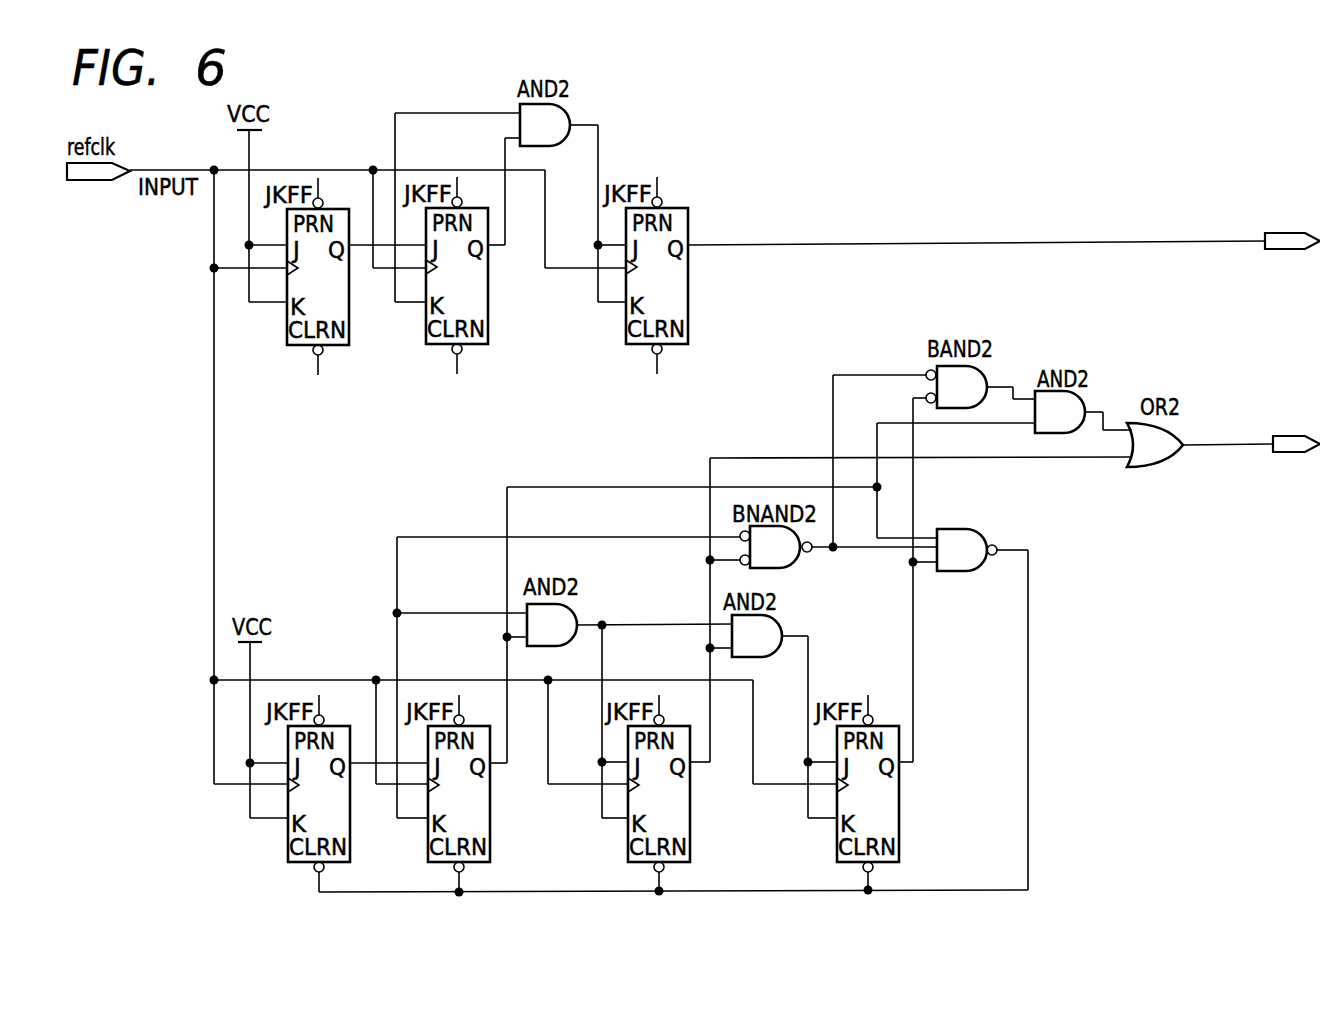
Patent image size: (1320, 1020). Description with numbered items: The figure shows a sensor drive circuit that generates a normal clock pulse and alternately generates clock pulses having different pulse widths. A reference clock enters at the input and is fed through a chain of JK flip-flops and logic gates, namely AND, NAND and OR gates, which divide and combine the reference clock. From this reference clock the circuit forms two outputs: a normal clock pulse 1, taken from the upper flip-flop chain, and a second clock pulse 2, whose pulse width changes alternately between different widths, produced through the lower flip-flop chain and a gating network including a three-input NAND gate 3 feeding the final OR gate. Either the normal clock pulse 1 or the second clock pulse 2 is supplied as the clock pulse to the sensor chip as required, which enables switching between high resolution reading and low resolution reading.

The clk1 output 1 is at (1004, 225).
The clk2 output 2 is at (1251, 453).
The NAND3 gate 3 is at (981, 693).